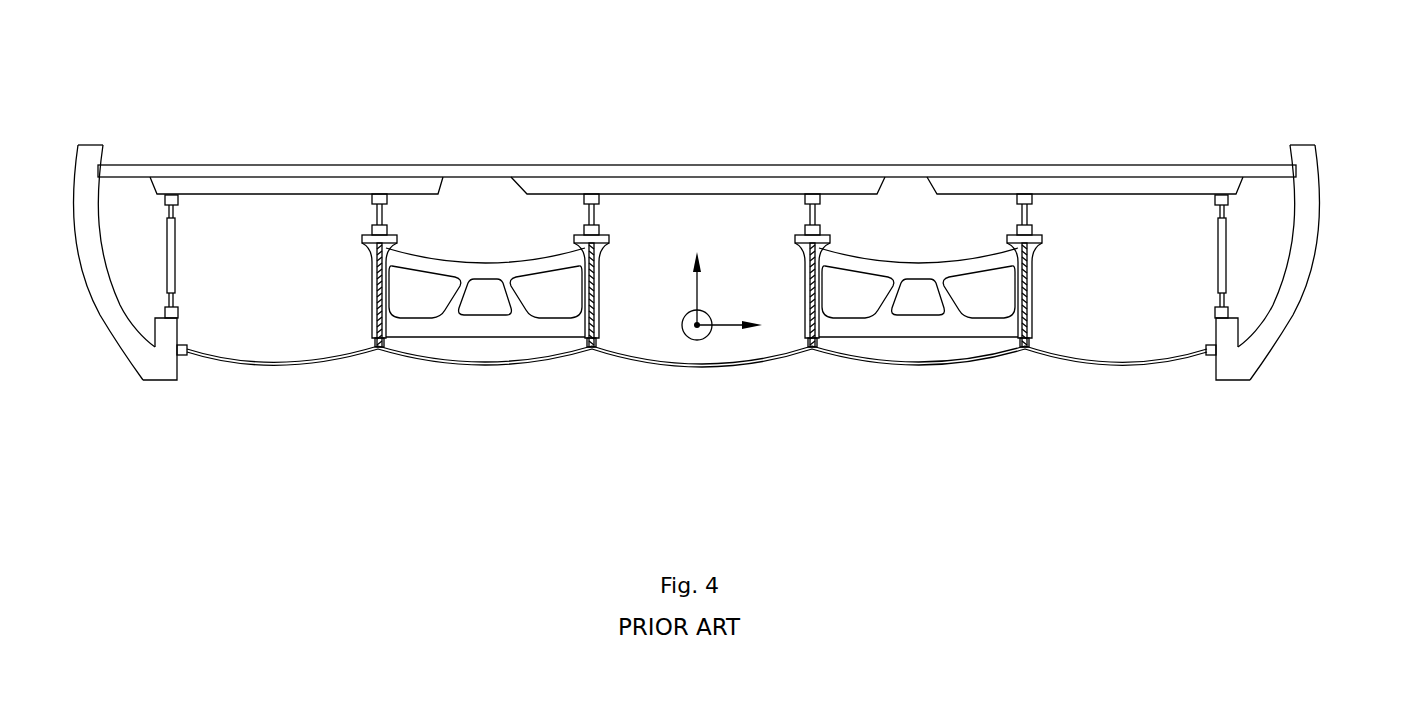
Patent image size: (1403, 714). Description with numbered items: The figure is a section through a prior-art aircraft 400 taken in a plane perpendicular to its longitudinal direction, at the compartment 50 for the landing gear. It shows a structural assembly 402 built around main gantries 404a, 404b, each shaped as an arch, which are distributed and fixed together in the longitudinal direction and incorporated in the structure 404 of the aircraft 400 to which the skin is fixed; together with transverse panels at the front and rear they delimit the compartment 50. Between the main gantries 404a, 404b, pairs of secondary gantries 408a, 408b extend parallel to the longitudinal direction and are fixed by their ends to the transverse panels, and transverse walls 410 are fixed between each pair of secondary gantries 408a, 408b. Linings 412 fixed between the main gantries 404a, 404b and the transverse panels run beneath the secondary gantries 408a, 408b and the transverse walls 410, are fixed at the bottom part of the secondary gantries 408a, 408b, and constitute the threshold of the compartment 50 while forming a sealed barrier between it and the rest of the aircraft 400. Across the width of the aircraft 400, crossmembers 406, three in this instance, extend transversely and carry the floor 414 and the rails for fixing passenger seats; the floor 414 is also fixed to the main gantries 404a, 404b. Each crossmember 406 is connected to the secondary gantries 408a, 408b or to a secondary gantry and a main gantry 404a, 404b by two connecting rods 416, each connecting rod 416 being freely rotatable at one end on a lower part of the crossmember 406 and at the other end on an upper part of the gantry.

The aircraft 400 is at (135, 151).
The structural assembly 402 is at (1216, 141).
The structure 404 is at (1319, 132).
The main gantry 404a is at (165, 369).
The main gantry 404b is at (1232, 360).
The crossmember 406 is at (708, 185).
The secondary gantry 408a is at (372, 281).
The secondary gantry 408b is at (600, 268).
The transverse wall 410 is at (473, 274).
The lining 412 is at (420, 360).
The floor 414 is at (1018, 177).
The connecting rod 416 is at (1222, 233).
The compartment 50 is at (723, 422).